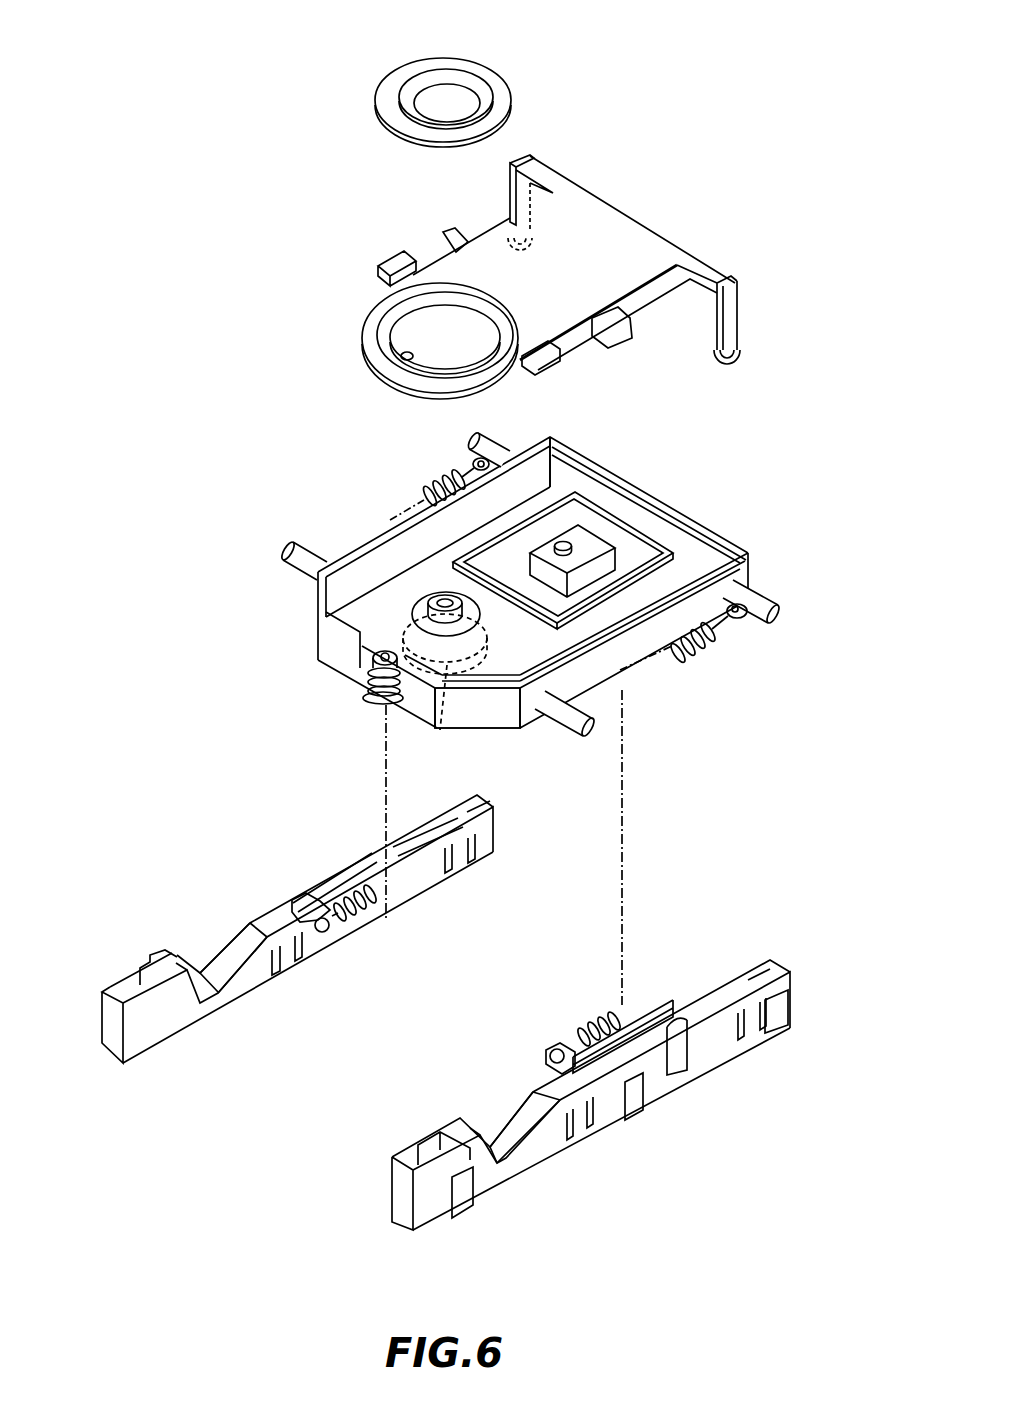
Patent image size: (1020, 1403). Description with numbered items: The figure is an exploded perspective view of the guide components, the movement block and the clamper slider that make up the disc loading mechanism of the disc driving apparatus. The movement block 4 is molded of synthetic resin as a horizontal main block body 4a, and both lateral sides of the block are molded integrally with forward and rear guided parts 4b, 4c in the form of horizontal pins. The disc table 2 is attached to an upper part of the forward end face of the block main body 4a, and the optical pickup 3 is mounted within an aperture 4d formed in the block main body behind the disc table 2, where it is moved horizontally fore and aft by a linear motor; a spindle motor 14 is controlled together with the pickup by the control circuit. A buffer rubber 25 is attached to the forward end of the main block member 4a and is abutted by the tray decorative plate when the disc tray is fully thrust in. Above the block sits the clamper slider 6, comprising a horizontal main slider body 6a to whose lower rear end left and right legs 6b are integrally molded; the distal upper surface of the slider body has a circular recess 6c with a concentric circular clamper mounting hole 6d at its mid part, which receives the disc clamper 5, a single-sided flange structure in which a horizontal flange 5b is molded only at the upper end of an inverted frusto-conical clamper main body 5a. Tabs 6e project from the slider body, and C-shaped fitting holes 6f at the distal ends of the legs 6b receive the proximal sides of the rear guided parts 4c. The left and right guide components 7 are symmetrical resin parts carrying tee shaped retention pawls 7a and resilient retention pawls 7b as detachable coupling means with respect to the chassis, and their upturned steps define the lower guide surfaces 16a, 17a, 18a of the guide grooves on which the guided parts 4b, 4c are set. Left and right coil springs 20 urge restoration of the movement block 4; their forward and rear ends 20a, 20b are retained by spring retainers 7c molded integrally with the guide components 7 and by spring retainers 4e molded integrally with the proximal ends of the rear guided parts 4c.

The disc table 2 is at (420, 603).
The optical pickup 3 is at (548, 585).
The movement block 4 is at (521, 579).
The main block body 4a is at (326, 648).
The forward guided parts 4b is at (298, 548).
The rear guided parts 4c is at (487, 440).
The aperture 4d is at (608, 527).
The spring retainers 4e is at (510, 457).
The disc clamper 5 is at (459, 73).
The clamper main body 5a is at (458, 93).
The flange 5b is at (503, 108).
The clamper slider 6 is at (537, 264).
The main slider body 6a is at (588, 225).
The legs 6b is at (510, 190).
The circular recess 6c is at (382, 332).
The clamper mounting hole 6d is at (410, 360).
The holder tab 6e is at (452, 240).
The C-shaped fitting holes 6f is at (738, 366).
The guide components 7 is at (452, 1015).
The tee shaped retention pawls 7a is at (770, 1025).
The resilient retention pawls 7b is at (462, 862).
The spring retainers 7c is at (294, 902).
The spindle motor 14 is at (471, 724).
The lower guide surface 16a is at (233, 950).
The lower guide surface 17a is at (500, 810).
The lower guide surface 18a is at (368, 857).
The coil springs 20 is at (432, 482).
The forward ends 20a is at (322, 932).
The rear ends 20b is at (472, 460).
The buffer rubber 25 is at (362, 673).